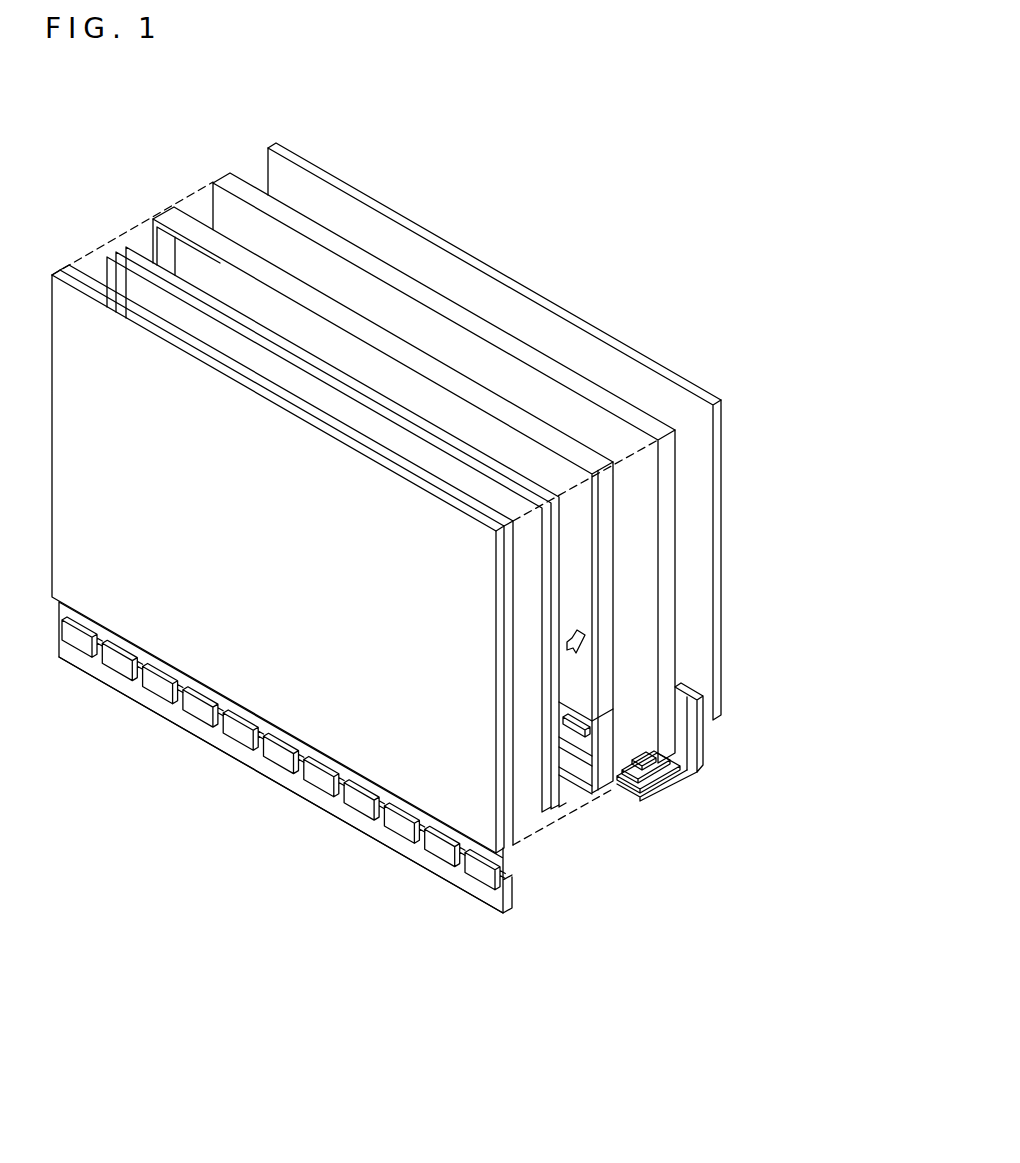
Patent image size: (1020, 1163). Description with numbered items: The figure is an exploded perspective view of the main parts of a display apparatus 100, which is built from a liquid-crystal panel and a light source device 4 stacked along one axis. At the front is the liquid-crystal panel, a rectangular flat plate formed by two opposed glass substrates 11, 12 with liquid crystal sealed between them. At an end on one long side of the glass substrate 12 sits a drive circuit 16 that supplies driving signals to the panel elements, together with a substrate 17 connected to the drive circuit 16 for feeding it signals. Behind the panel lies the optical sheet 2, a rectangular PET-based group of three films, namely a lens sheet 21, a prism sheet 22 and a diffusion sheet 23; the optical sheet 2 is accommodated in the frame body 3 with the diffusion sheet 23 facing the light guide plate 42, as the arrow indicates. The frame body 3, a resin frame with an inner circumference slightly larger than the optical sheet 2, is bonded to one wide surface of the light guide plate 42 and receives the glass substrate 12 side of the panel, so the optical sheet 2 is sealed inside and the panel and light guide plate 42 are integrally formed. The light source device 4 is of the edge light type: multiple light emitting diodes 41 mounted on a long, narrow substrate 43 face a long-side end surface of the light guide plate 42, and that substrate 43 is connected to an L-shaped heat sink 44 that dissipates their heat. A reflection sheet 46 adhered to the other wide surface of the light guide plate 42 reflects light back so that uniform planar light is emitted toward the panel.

The display apparatus 100 is at (93, 227).
The glass substrate 11 is at (477, 822).
The glass substrate 12 is at (510, 862).
The drive circuit 16 is at (355, 800).
The substrate 17 is at (443, 867).
The optical sheet 2 is at (637, 868).
The lens sheet 21 is at (548, 813).
The prism sheet 22 is at (553, 815).
The diffusion sheet 23 is at (558, 815).
The frame body 3 is at (605, 778).
The light source device 4 is at (832, 793).
The light emitting diode 41 is at (646, 760).
The light guide plate 42 is at (670, 733).
The substrate 43 is at (676, 778).
The heat sink 44 is at (690, 712).
The reflection sheet 46 is at (720, 705).